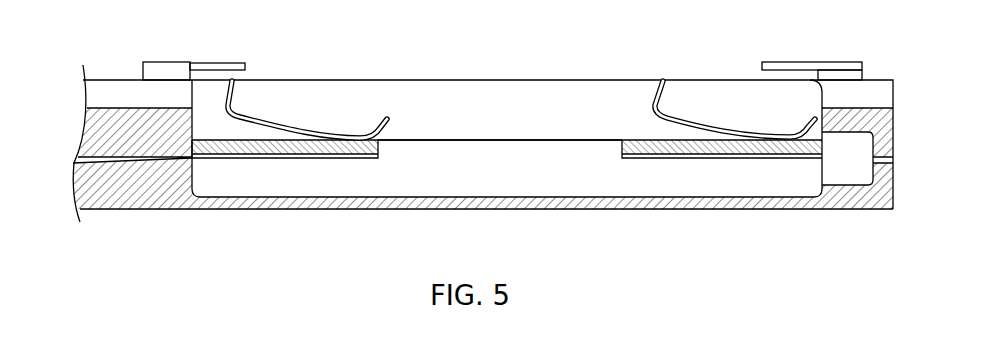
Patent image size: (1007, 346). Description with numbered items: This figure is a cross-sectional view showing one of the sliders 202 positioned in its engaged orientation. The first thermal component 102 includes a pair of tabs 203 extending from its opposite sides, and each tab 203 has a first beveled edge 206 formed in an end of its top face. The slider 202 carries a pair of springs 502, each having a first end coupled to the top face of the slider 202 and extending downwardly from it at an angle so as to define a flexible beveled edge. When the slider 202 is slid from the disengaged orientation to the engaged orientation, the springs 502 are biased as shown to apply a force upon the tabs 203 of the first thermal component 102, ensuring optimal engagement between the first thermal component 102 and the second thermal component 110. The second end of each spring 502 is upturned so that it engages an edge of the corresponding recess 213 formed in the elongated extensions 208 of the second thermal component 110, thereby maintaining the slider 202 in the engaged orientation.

The first thermal component 102 is at (877, 80).
The second thermal component 110 is at (867, 209).
The slider 202 is at (682, 200).
The tab 203 is at (203, 140).
The first beveled edge 206 is at (521, 163).
The elongated extension 208 is at (505, 141).
The recess 213 is at (253, 157).
The spring 502 is at (270, 118).